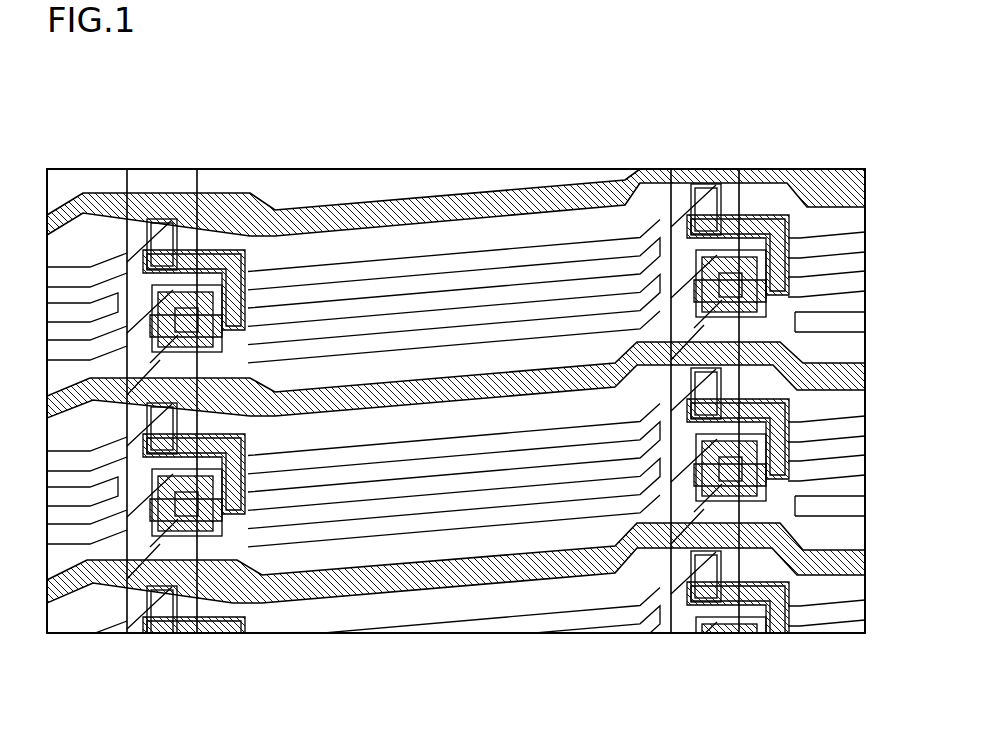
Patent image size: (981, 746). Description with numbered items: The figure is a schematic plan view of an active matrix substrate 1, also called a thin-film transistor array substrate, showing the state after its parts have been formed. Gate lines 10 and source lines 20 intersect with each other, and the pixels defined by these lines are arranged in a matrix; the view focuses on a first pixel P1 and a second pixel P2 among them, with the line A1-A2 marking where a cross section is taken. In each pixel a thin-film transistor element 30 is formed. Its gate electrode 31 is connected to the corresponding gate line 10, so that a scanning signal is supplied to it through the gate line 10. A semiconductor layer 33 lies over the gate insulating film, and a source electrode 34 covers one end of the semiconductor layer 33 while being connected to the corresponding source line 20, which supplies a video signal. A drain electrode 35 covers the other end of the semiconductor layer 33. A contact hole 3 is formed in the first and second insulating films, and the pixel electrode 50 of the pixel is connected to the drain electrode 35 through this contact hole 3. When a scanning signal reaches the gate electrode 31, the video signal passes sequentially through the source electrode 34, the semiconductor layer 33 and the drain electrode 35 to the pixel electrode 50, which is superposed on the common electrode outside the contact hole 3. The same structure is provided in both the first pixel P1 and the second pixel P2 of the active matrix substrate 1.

The active matrix substrate 1 is at (872, 140).
The contact hole 3 is at (188, 307).
The gate line 10 is at (134, 621).
The source line 20 is at (571, 187).
The thin-film transistor element 30 is at (212, 220).
The gate electrode 31 is at (152, 232).
The semiconductor layer 33 is at (158, 253).
The source electrode 34 is at (165, 288).
The drain electrode 35 is at (180, 252).
The pixel electrode 50 is at (458, 262).
The line A1-A2 end point A1 is at (95, 255).
The line A1-A2 end point A2 is at (277, 255).
The first pixel P1 is at (432, 565).
The second pixel P2 is at (413, 226).